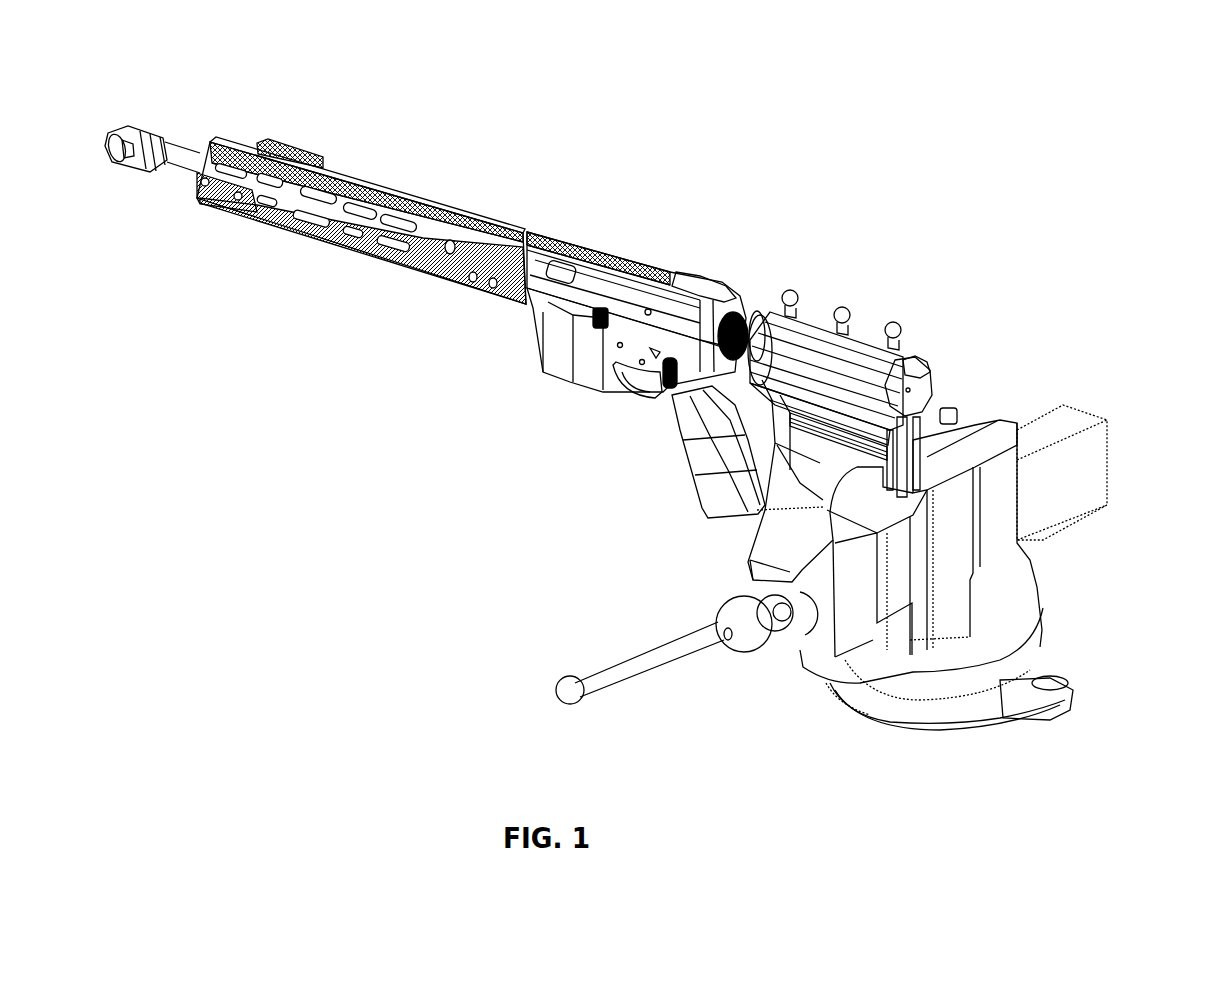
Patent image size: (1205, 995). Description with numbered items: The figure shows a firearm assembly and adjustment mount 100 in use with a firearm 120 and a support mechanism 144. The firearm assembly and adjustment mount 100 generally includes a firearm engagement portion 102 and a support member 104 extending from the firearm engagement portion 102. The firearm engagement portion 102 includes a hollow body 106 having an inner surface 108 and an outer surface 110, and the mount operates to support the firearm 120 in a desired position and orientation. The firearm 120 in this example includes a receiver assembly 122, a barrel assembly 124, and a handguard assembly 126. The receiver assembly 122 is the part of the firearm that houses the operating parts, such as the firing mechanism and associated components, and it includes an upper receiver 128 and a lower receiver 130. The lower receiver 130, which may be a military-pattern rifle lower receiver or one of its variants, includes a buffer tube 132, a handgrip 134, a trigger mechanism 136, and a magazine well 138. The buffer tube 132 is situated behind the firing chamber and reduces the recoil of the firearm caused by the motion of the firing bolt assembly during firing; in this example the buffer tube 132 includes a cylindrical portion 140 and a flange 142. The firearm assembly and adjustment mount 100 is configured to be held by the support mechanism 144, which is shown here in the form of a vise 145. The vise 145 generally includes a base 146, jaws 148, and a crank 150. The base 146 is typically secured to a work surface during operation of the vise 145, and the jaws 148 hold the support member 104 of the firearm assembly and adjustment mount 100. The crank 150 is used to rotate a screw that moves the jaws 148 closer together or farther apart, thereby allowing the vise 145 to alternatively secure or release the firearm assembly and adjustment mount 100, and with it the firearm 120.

The firearm assembly and adjustment mount 100 is at (930, 306).
The firearm engagement portion 102 is at (810, 315).
The support member 104 is at (912, 445).
The hollow body 106 is at (917, 360).
The inner surface 108 is at (908, 406).
The outer surface 110 is at (797, 377).
The firearm 120 is at (316, 419).
The receiver assembly 122 is at (648, 245).
The barrel assembly 124 is at (185, 128).
The handguard assembly 126 is at (272, 283).
The upper receiver 128 is at (648, 301).
The lower receiver 130 is at (594, 416).
The buffer tube 132 is at (758, 330).
The handgrip 134 is at (712, 483).
The trigger mechanism 136 is at (638, 390).
The magazine well 138 is at (543, 336).
The cylindrical portion 140 is at (750, 336).
The flange 142 is at (907, 447).
The support mechanism 144 is at (832, 781).
The vise 145 is at (1000, 520).
The base 146 is at (963, 708).
The jaws 148 is at (862, 443).
The crank 150 is at (596, 686).